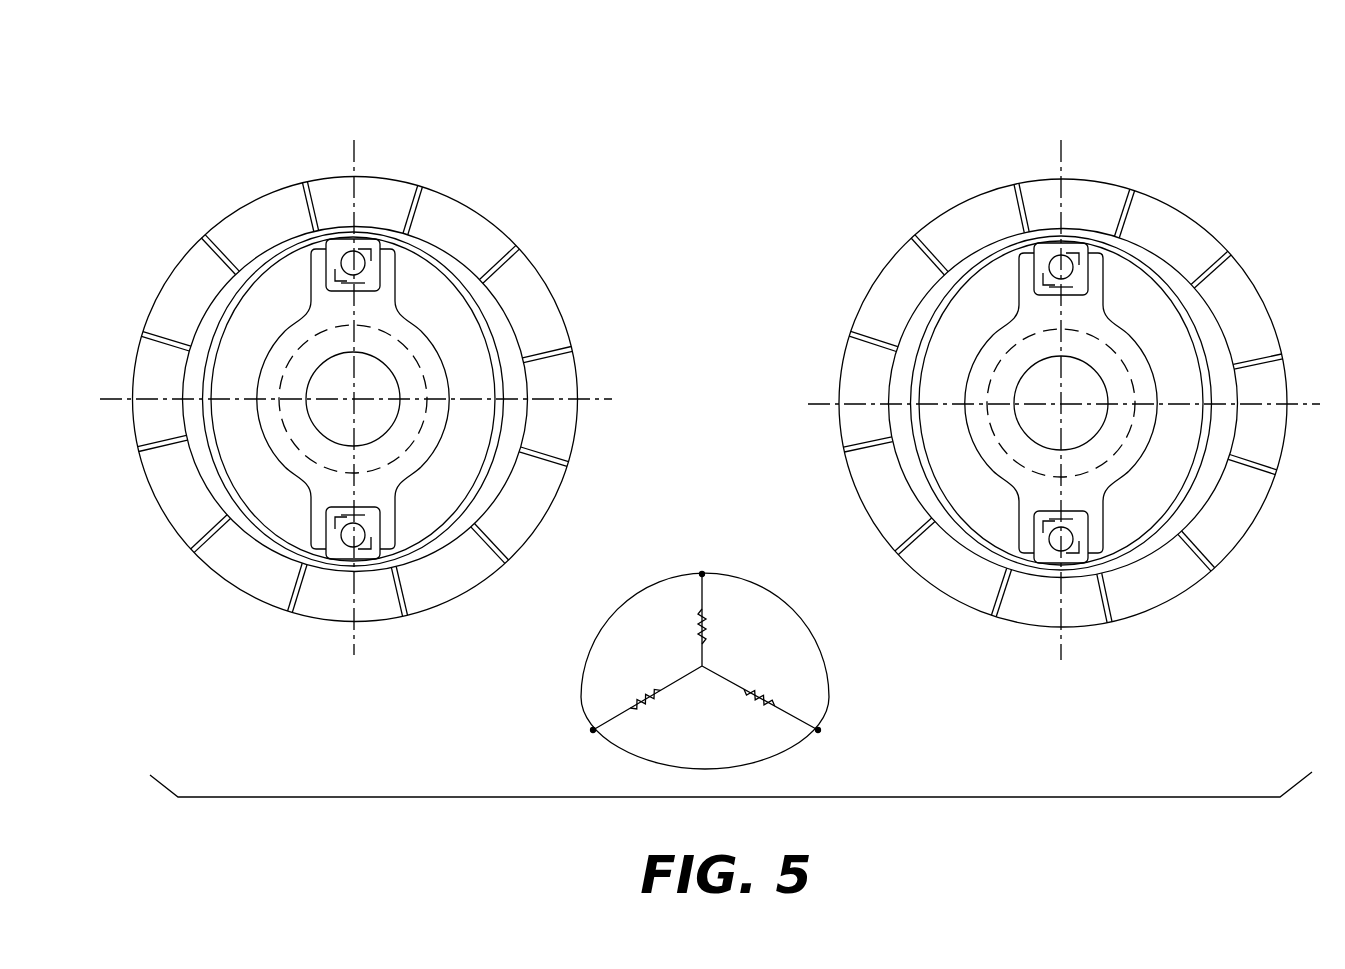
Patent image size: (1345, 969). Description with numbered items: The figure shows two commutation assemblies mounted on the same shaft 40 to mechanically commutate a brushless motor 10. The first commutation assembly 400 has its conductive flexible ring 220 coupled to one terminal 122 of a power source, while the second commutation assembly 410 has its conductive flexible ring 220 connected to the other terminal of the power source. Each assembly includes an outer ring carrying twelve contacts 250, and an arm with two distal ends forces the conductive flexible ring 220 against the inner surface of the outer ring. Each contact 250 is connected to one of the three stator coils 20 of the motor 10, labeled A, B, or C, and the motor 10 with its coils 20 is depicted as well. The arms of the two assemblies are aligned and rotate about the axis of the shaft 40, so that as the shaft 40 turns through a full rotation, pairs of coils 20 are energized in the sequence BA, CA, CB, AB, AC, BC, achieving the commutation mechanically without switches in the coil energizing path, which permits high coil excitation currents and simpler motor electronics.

The first commutation assembly 400 is at (371, 86).
The second commutation assembly 410 is at (1083, 92).
The contact 250 is at (372, 178).
The terminal 122 is at (482, 300).
The conductive flexible ring 220 is at (1186, 311).
The shaft 40 is at (382, 355).
The motor 10 is at (800, 595).
The stator coil 20 is at (708, 630).